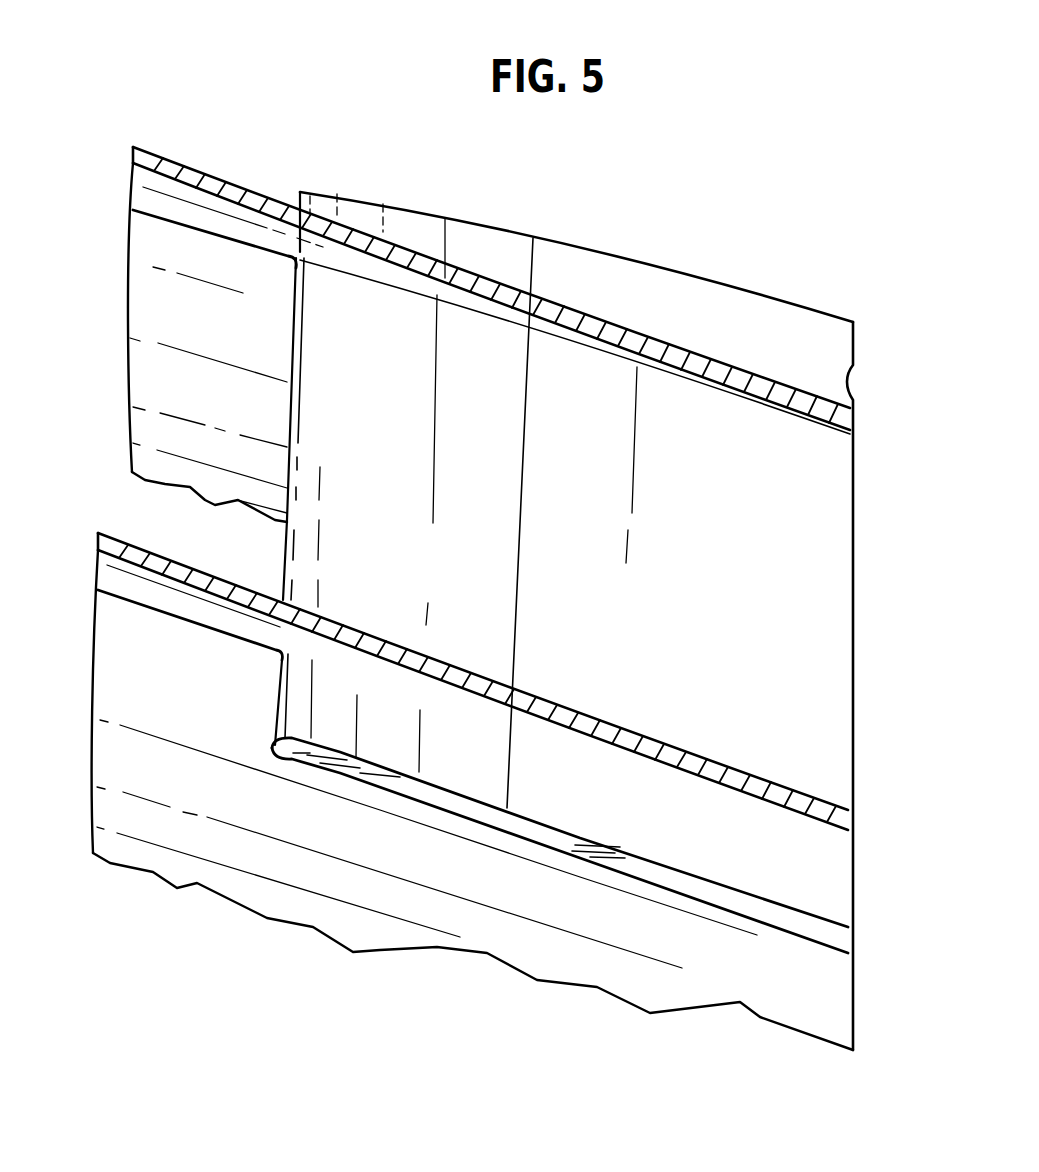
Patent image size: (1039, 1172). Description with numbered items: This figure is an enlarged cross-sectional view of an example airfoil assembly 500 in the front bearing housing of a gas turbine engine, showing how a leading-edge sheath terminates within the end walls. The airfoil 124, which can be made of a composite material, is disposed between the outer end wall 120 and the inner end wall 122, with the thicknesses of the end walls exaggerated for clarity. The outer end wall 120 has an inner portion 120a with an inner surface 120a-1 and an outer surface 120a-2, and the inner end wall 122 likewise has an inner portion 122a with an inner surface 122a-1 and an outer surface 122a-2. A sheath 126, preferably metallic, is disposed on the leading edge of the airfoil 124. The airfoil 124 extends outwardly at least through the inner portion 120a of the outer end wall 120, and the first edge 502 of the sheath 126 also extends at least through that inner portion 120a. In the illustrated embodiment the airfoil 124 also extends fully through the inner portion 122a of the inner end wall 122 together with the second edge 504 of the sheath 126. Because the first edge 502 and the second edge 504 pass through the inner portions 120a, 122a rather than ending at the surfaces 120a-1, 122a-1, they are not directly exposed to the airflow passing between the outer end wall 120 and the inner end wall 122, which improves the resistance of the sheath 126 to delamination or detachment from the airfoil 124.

The airfoil assembly 500 is at (268, 138).
The outer end wall 120 is at (142, 304).
The inner portion of the outer end wall 120a is at (840, 410).
The inner surface of the inner portion of the outer end wall 120a-1 is at (168, 177).
The outer surface of the inner portion of the outer end wall 120a-2 is at (183, 172).
The inner end wall 122 is at (148, 678).
The inner portion of the inner end wall 122a is at (842, 818).
The inner surface of the inner portion of the inner end wall 122a-1 is at (152, 556).
The outer surface of the inner portion of the inner end wall 122a-2 is at (145, 562).
The airfoil 124 is at (772, 519).
The sheath 126 is at (502, 464).
The first edge of the sheath 502 is at (508, 222).
The second edge of the sheath 504 is at (482, 800).